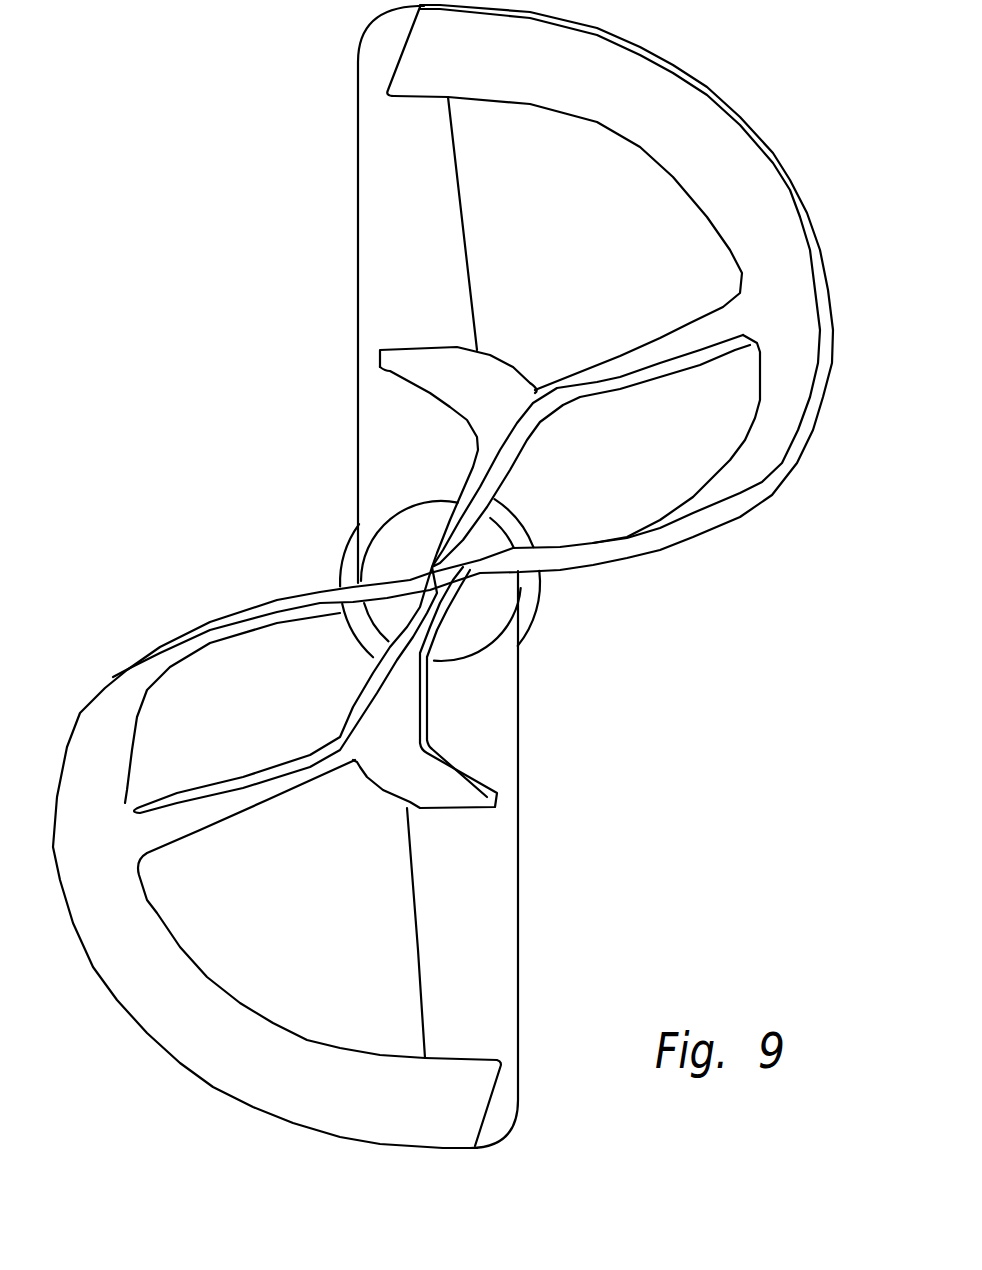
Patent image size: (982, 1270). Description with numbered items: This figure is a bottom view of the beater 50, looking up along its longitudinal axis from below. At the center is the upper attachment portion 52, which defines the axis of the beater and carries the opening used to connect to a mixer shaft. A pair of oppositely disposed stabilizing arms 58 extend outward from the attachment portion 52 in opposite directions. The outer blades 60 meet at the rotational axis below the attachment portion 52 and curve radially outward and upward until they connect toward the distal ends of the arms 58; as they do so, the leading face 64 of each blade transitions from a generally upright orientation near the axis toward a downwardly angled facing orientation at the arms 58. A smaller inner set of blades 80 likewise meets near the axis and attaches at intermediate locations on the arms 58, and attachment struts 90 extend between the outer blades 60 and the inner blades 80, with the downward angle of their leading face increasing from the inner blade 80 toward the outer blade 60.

The beater 50 is at (207, 138).
The upper attachment portion 52 is at (534, 603).
The stabilizing arms 58 is at (392, 268).
The outer blades 60 is at (755, 174).
The leading face 64 is at (713, 487).
The inner blades 80 is at (480, 372).
The attachment struts 90 is at (655, 342).